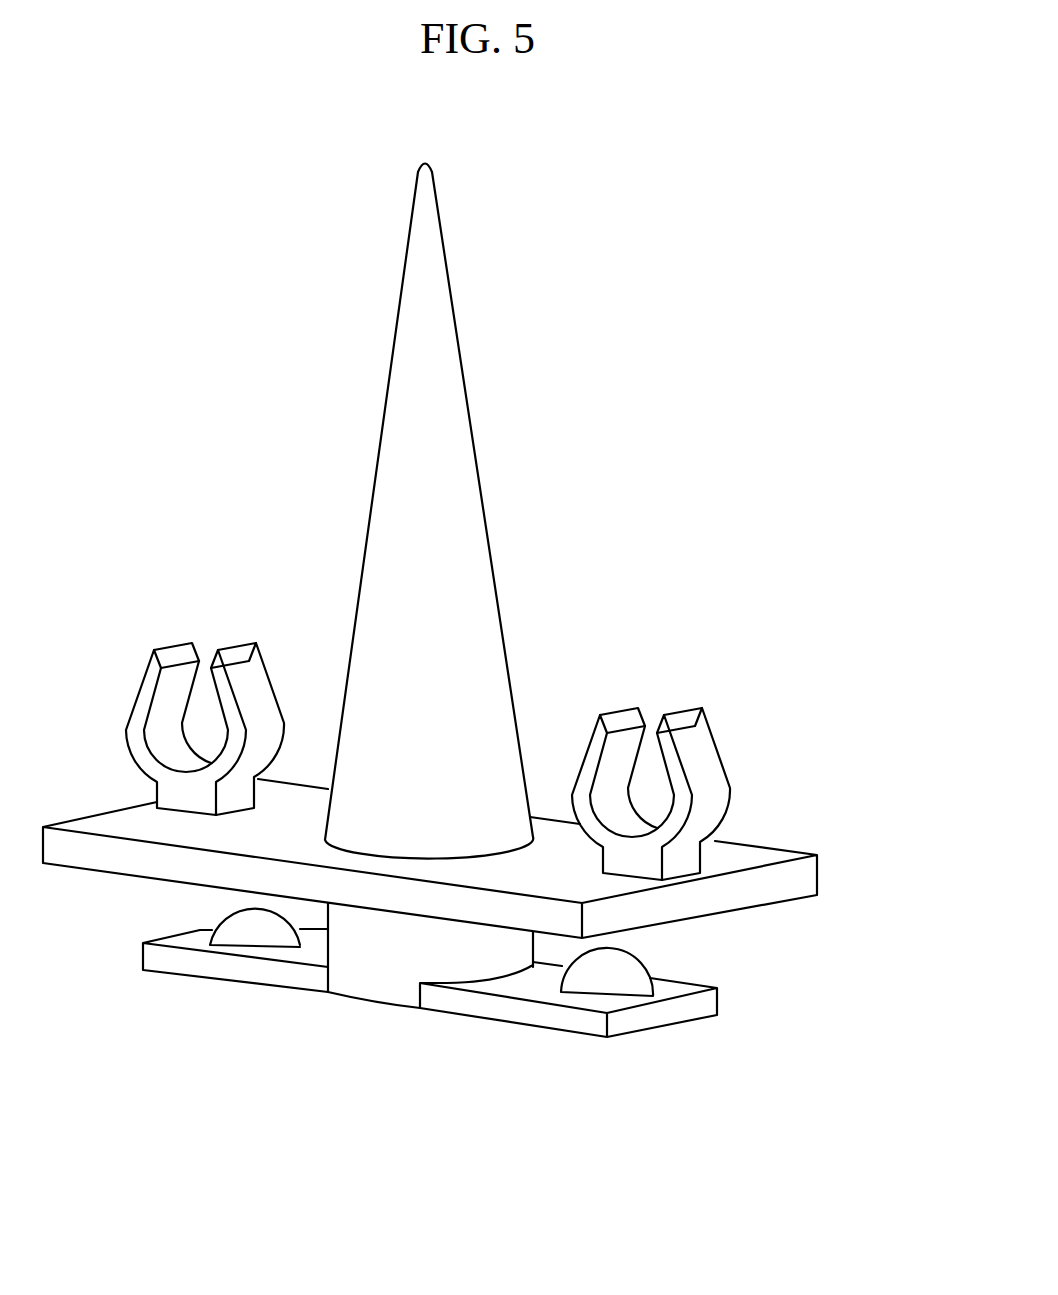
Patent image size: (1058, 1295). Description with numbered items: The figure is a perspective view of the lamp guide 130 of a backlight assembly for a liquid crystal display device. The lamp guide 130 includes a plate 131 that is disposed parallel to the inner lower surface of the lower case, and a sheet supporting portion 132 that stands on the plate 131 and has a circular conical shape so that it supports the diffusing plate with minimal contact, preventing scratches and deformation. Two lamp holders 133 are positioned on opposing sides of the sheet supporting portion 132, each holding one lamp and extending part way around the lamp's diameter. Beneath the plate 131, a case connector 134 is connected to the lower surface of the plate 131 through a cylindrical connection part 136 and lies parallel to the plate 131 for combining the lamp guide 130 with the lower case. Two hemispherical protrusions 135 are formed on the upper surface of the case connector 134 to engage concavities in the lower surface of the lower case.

The lamp guide 130 is at (655, 444).
The plate 131 is at (802, 875).
The sheet supporting portion 132 is at (438, 367).
The lamp holder 133 is at (708, 768).
The case connector 134 is at (477, 1003).
The protrusion 135 is at (247, 920).
The connection part 136 is at (390, 948).